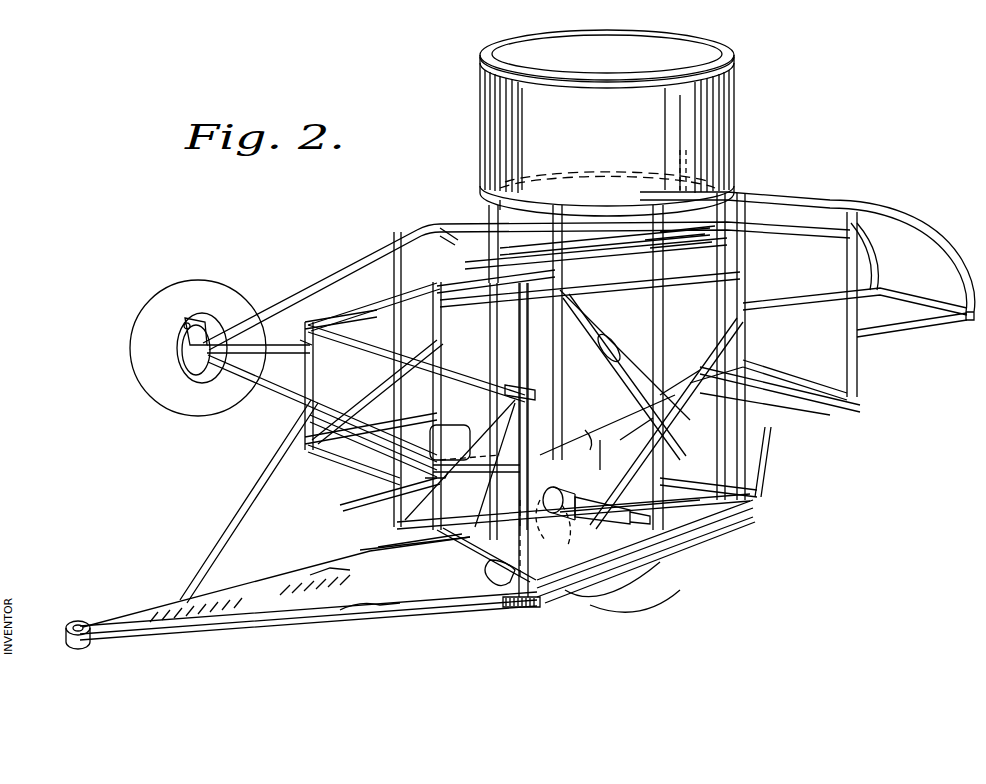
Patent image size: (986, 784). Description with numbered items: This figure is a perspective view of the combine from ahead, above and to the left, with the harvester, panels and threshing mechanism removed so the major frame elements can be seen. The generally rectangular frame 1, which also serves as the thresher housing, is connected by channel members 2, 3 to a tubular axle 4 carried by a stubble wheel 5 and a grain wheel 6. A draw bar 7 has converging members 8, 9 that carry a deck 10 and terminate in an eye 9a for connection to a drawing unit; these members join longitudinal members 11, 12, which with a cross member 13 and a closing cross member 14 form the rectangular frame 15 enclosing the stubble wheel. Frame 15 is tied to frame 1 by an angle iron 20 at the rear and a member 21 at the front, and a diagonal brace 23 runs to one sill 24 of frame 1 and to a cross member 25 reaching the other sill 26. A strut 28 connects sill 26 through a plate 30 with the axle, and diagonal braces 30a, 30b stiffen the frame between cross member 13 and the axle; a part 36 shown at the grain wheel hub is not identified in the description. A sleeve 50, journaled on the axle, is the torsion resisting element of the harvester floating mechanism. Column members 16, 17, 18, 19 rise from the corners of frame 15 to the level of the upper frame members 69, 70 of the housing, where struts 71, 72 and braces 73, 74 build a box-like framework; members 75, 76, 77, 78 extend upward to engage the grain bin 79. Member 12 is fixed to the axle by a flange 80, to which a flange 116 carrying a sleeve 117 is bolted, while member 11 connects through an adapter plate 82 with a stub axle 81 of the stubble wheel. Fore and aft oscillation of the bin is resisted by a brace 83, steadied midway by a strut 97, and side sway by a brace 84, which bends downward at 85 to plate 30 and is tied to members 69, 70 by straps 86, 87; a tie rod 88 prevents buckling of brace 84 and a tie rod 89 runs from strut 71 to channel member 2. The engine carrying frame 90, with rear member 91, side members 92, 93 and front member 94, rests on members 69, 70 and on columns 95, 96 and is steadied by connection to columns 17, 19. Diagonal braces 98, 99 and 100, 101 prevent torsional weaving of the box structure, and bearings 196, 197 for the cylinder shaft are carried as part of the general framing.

The rectangular frame 1 is at (790, 215).
The channel member 2 is at (445, 500).
The channel member 3 is at (412, 440).
The axle 4 is at (438, 470).
The stubble wheel 5 is at (640, 600).
The grain wheel 6 is at (200, 292).
The draw bar 7 is at (330, 630).
The converging member 8 is at (350, 618).
The converging member 9 is at (338, 568).
The eye 9a is at (78, 622).
The deck 10 is at (288, 585).
The longitudinal member 11 is at (700, 540).
The longitudinal member 12 is at (455, 555).
The cross member 13 is at (475, 612).
The cross member 14 is at (720, 483).
The frame 15 is at (672, 550).
The column member 16 is at (738, 393).
The column member 17 is at (505, 600).
The column member 18 is at (665, 420).
The column member 19 is at (395, 520).
The angle iron 20 is at (595, 440).
The member 21 is at (400, 532).
The diagonal brace 23 is at (770, 447).
The sill 24 is at (836, 408).
The cross member 25 is at (745, 378).
The sill 26 is at (688, 368).
The strut 28 is at (305, 340).
The plate 30 is at (205, 375).
The diagonal brace 30a is at (500, 578).
The diagonal brace 30b is at (455, 546).
The axle mount 36 is at (185, 330).
The sleeve 50 is at (300, 398).
The upper frame member 69 is at (490, 232).
The upper frame member 70 is at (600, 245).
The longitudinal strut 71 is at (582, 294).
The strut 72 is at (496, 400).
The brace 73 is at (498, 411).
The brace 74 is at (692, 240).
The member 75 is at (558, 234).
The member 76 is at (722, 200).
The member 77 is at (500, 208).
The member 78 is at (660, 208).
The grain bin 79 is at (607, 123).
The flange 80 is at (548, 500).
The stub axle 81 is at (558, 525).
The adapter plate 82 is at (590, 575).
The brace 83 is at (265, 498).
The brace 84 is at (378, 240).
The bend 85 is at (425, 228).
The strap 86 is at (440, 240).
The strap 87 is at (512, 262).
The tie rod 88 is at (436, 300).
The tie rod 89 is at (628, 320).
The engine carrying frame 90 is at (358, 312).
The rear member 91 is at (395, 305).
The side member 92 is at (355, 313).
The side member 93 is at (455, 343).
The front member 94 is at (305, 352).
The column 95 is at (310, 417).
The column 96 is at (360, 492).
The strut 97 is at (335, 485).
The diagonal brace 98 is at (600, 500).
The diagonal brace 99 is at (665, 512).
The diagonal brace 100 is at (476, 453).
The diagonal brace 101 is at (612, 346).
The flange 116 is at (551, 521).
The sleeve 117 is at (565, 498).
The bearing 196 is at (600, 415).
The bearing 197 is at (493, 396).